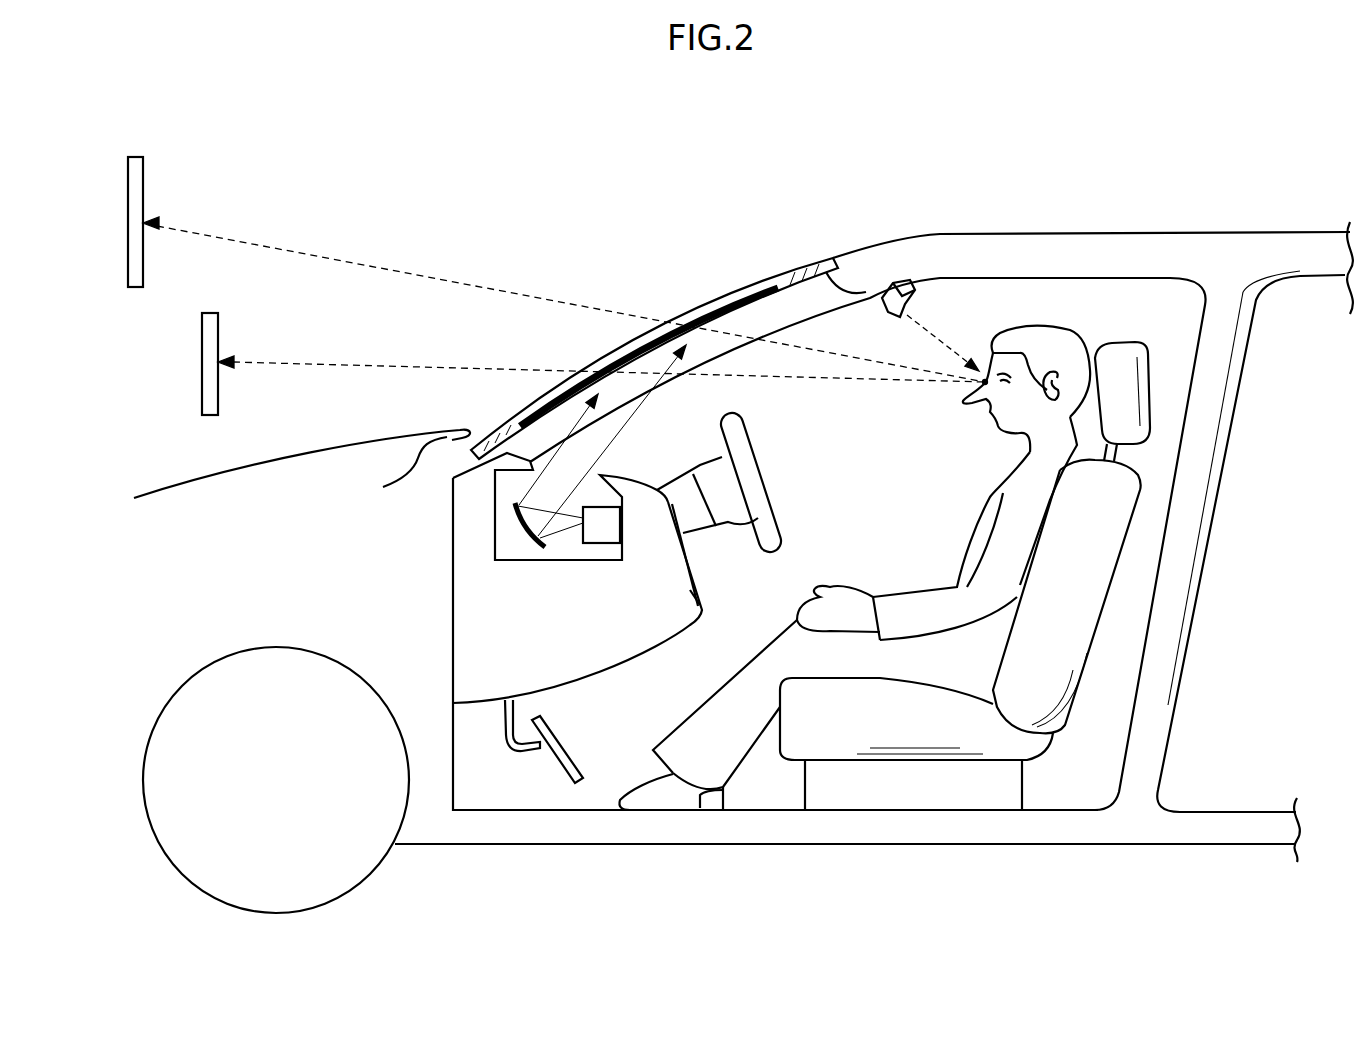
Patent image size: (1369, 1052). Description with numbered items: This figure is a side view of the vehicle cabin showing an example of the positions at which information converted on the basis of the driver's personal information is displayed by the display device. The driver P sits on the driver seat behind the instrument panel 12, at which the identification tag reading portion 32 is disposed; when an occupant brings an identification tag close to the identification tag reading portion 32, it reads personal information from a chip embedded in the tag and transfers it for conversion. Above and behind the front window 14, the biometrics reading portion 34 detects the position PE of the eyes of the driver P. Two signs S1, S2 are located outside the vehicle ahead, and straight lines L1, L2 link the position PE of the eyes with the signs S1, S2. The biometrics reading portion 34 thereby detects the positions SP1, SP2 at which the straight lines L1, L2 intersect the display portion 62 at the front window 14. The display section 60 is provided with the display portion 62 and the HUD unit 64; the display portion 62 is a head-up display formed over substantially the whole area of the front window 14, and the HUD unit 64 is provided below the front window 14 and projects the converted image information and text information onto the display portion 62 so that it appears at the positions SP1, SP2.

The instrument panel 12 is at (683, 530).
The front window 14 is at (807, 262).
The identification tag reading portion 32 is at (698, 575).
The biometrics reading portion 34 is at (912, 306).
The display section 60 is at (670, 165).
The display portion 62 is at (776, 287).
The HUD unit 64 is at (636, 474).
The driver P is at (1080, 342).
The position of the eyes PE is at (986, 388).
The sign S1 is at (136, 156).
The sign S2 is at (207, 416).
The straight line L1 is at (415, 273).
The straight line L2 is at (404, 366).
The position SP1 is at (698, 320).
The position SP2 is at (606, 374).